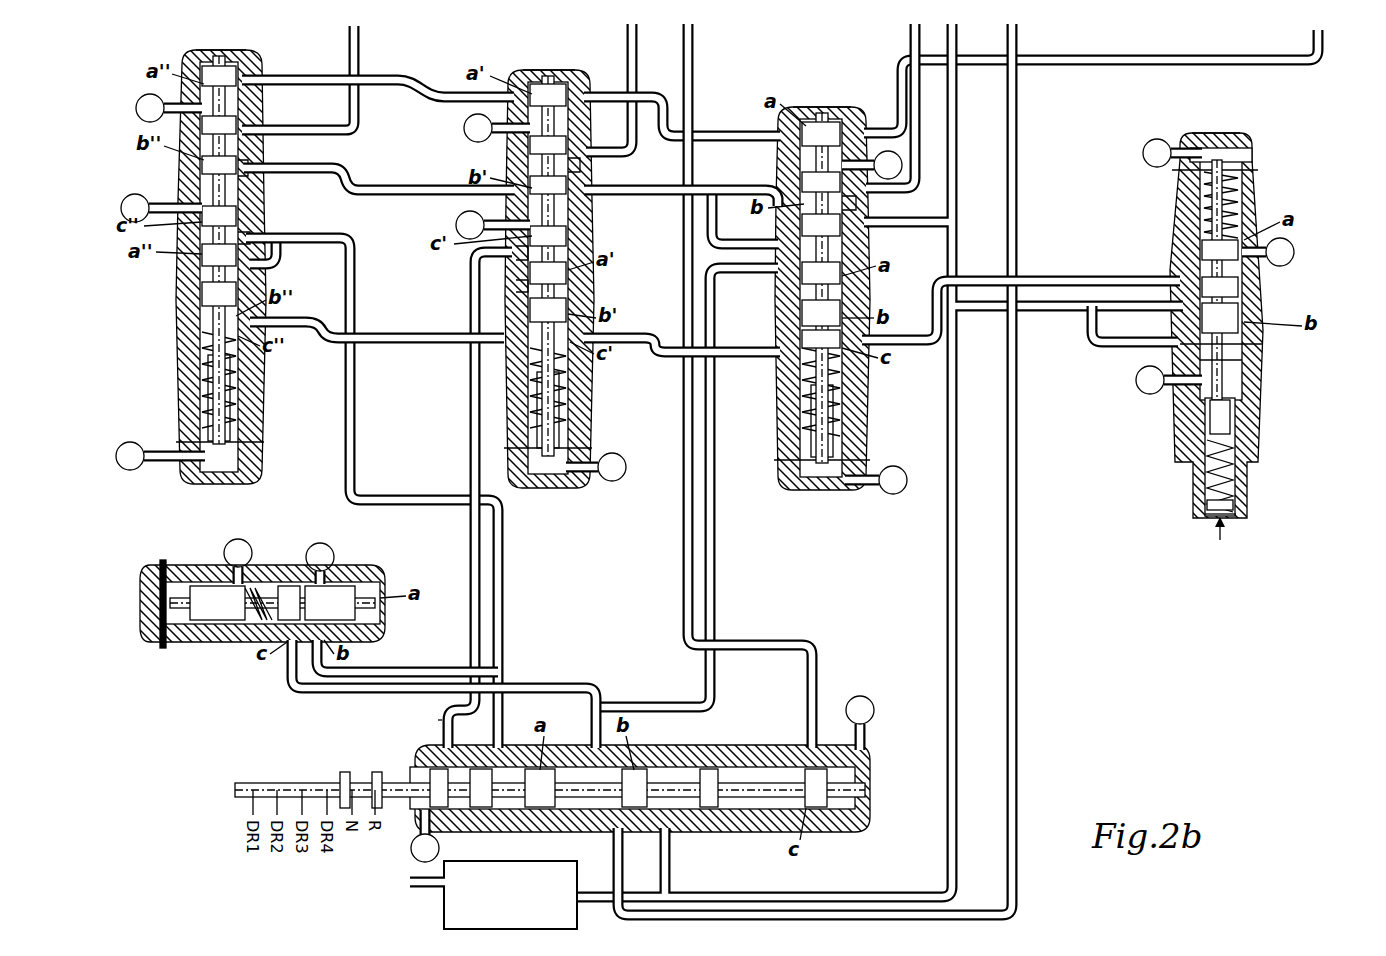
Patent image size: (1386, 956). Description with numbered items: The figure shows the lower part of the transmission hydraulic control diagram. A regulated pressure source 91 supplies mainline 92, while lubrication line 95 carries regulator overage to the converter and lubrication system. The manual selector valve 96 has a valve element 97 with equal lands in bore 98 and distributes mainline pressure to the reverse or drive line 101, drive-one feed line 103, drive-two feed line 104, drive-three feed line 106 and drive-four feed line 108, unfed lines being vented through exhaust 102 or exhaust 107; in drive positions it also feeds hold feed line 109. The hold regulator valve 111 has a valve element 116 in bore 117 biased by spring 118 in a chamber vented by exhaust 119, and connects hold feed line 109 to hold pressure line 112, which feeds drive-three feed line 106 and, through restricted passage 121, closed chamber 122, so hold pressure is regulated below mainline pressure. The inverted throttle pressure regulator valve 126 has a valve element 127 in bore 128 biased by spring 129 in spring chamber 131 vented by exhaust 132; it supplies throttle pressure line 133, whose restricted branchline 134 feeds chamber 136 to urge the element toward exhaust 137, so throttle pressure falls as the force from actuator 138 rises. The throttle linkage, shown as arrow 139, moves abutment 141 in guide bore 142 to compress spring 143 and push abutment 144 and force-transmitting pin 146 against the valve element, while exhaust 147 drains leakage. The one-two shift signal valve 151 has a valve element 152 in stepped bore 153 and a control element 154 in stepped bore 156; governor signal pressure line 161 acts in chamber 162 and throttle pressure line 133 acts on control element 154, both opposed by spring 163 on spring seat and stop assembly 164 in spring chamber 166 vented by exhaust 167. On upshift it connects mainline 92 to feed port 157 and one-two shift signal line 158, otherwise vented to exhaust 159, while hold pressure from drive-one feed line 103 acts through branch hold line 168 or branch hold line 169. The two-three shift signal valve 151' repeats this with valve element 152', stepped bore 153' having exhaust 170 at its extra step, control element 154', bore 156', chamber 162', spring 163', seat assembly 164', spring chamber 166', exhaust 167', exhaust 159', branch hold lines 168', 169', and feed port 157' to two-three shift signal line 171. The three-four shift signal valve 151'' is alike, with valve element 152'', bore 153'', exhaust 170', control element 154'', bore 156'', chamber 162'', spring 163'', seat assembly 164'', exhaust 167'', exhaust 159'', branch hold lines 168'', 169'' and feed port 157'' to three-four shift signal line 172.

The regulated pressure source 91 is at (444, 900).
The mainline 92 is at (956, 44).
The lubrication line 95 is at (402, 880).
The manual selector valve 96 is at (366, 736).
The valve element 97 is at (700, 780).
The bore 98 is at (740, 770).
The reverse selector or drive line 101 is at (694, 58).
The exhaust 102 is at (870, 698).
The drive 1 feed line 103 is at (442, 712).
The drive 2 feed line 104 is at (470, 348).
The drive 3 feed line 106 is at (336, 234).
The exhaust 107 is at (440, 846).
The drive 4 feed line 108 is at (1018, 44).
The hold feed line 109 is at (316, 694).
The hold regulator valve 111 is at (124, 580).
The hold pressure line 112 is at (396, 666).
The valve element 116 is at (292, 586).
The bore 117 is at (334, 566).
The spring 118 is at (258, 588).
The exhaust 119 is at (224, 548).
The restricted passage 121 is at (372, 616).
The closed chamber 122 is at (372, 584).
The inverted throttle pressure regulator valve 126 is at (1264, 170).
The valve element 127 is at (1244, 312).
The bore 128 is at (1244, 284).
The spring 129 is at (1244, 240).
The spring chamber 131 is at (1240, 196).
The exhaust 132 is at (1148, 164).
The throttle pressure line 133 is at (308, 342).
The restricted branchline 134 is at (1106, 344).
The chamber 136 is at (1246, 346).
The exhaust 137 is at (1294, 252).
The actuator 138 is at (1172, 434).
The arrow 139 is at (1236, 512).
The movable abutment 141 is at (1206, 514).
The guide bore 142 is at (1206, 502).
The spring 143 is at (1208, 470).
The abutment 144 is at (1250, 424).
The force-transmitting pin 146 is at (1246, 364).
The exhaust 147 is at (1140, 392).
The 1-2 shift signal valve 151 is at (808, 324).
The 2-3 shift signal valve 151' is at (591, 303).
The 3-4 shift signal valve 151'' is at (155, 267).
The valve element 152 is at (782, 174).
The 2-3 shift valve element 152' is at (505, 151).
The valve element 152'' is at (257, 121).
The stepped bore 153 is at (788, 160).
The stepped bore 153' is at (584, 116).
The stepped bore 153'' is at (257, 92).
The control element 154 is at (789, 291).
The control element 154' is at (495, 291).
The control element 154'' is at (174, 266).
The stepped bore 156 is at (859, 303).
The stepped bore 156' is at (589, 301).
The stepped bore 156'' is at (271, 288).
The feed port 157 is at (881, 207).
The feed port 157' is at (612, 169).
The feed port 157'' is at (310, 159).
The 1-2 shift signal line 158 is at (912, 40).
The exhaust 159 is at (921, 162).
The exhaust 159' is at (469, 128).
The exhaust 159'' is at (139, 108).
The governor signal pressure line 161 is at (300, 76).
The chamber 162 is at (822, 96).
The chamber 162' is at (547, 62).
The chamber 162'' is at (208, 43).
The spring 163 is at (851, 422).
The spring 163' is at (507, 414).
The spring 163'' is at (244, 387).
The spring seat and stop assembly 164 is at (777, 421).
The spring seat and stop assembly 164' is at (490, 422).
The spring seat and stop assembly 164'' is at (171, 398).
The spring chamber 166 is at (781, 392).
The spring chamber 166' is at (587, 388).
The exhaust 167 is at (888, 462).
The exhaust 167' is at (613, 452).
The exhaust 167'' is at (135, 446).
The branch hold line 168 is at (712, 220).
The branch hold line 168' is at (468, 262).
The branch hold line 168'' is at (277, 222).
The branch hold line 169 is at (687, 482).
The branch hold line 169' is at (478, 291).
The branch hold line 169'' is at (295, 253).
The exhaust 170 is at (470, 216).
The exhaust 170' is at (139, 197).
The 2-3 shift signal line 171 is at (626, 44).
The 3-4 shift signal line 172 is at (360, 52).